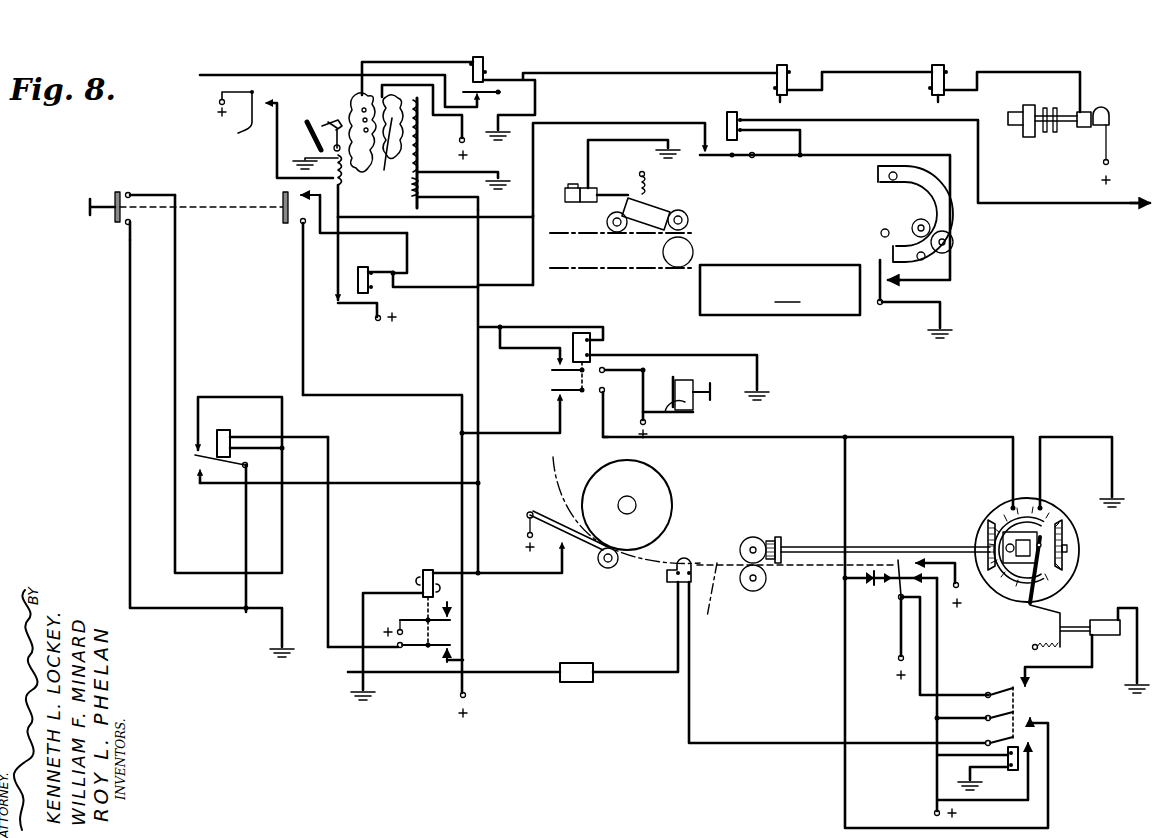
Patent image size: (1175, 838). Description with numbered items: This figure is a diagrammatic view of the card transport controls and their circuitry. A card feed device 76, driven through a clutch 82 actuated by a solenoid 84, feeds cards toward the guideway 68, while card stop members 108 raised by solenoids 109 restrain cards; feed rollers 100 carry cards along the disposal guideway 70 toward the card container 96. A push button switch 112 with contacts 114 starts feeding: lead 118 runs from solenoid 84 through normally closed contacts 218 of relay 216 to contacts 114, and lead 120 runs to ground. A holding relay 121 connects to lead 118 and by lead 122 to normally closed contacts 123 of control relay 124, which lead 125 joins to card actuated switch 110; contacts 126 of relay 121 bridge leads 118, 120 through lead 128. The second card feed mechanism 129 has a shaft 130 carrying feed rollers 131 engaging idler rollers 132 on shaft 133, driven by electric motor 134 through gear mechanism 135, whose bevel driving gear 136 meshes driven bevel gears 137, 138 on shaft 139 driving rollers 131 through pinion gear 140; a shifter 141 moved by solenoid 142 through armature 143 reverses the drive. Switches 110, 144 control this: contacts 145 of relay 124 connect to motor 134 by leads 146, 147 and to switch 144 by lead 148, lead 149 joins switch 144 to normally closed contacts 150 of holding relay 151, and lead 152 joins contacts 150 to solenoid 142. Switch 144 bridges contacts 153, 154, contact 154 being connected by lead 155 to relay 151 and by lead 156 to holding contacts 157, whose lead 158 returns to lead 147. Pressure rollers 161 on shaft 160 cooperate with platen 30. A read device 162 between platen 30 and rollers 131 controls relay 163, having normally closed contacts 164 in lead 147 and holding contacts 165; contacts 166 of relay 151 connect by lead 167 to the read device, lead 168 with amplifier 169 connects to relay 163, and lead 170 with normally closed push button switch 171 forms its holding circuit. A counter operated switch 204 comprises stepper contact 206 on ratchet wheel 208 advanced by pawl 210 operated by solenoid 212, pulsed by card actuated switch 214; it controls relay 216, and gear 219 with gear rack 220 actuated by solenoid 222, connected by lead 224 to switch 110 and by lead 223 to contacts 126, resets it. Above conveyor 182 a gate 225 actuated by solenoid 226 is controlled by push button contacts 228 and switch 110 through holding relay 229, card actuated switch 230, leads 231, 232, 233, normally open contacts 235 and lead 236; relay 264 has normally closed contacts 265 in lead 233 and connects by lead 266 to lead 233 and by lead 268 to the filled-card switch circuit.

The platen 30 is at (672, 505).
The guideway 68 is at (637, 546).
The card disposal guideway 70 is at (910, 196).
The card feed device 76 is at (1090, 110).
The clutch 82 is at (1047, 135).
The solenoid 84 is at (1112, 117).
The card container 96 is at (780, 290).
The card feed rollers 100 is at (953, 243).
The card stop members 108 is at (783, 99).
The solenoids 109 is at (788, 68).
The card actuated switch 110 is at (560, 515).
The push button switch 112 is at (118, 190).
The contacts 114 is at (131, 193).
The lead 118 is at (675, 73).
The lead 120 is at (130, 440).
The holding relay 121 is at (232, 430).
The lead 122 is at (327, 538).
The normally closed contacts 123 is at (455, 645).
The control relay 124 is at (430, 566).
The lead 125 is at (520, 575).
The contacts 126 is at (215, 468).
The lead 128 is at (244, 540).
The second card feed mechanism 129 is at (990, 503).
The driven transverse shaft 130 is at (740, 550).
The card feed rollers 131 is at (758, 538).
The idler rollers 132 is at (762, 588).
The shaft 133 is at (768, 580).
The electric motor 134 is at (1064, 533).
The gear mechanism 135 is at (1007, 585).
The bevel driving gear 136 is at (1033, 592).
The driven bevel gear 137 is at (988, 528).
The driven bevel gear 138 is at (1066, 557).
The shaft 139 is at (862, 546).
The pinion gear 140 is at (772, 538).
The shifter 141 is at (1032, 535).
The solenoid 142 is at (1105, 636).
The solenoid armature 143 is at (1063, 612).
The card actuated switch 144 is at (897, 588).
The normally open contacts 145 is at (455, 618).
The lead 146 is at (460, 500).
The lead 147 is at (808, 440).
The lead 148 is at (847, 486).
The lead 149 is at (918, 688).
The normally closed contacts 150 is at (1032, 692).
The holding relay 151 is at (1020, 770).
The lead 152 is at (1118, 660).
The contact 153 is at (920, 573).
The contact 154 is at (908, 560).
The lead 155 is at (938, 662).
The lead 156 is at (965, 708).
The holding contacts 157 is at (1020, 713).
The lead 158 is at (844, 712).
The transverse shaft 160 is at (616, 562).
The pressure rollers 161 is at (605, 568).
The read device 162 is at (672, 583).
The relay 163 is at (582, 332).
The normally closed contacts 164 is at (550, 390).
The holding contacts 165 is at (550, 370).
The normally open contacts 166 is at (1020, 738).
The lead 167 is at (778, 745).
The lead 168 is at (663, 675).
The amplifier 169 is at (578, 685).
The lead 170 is at (640, 356).
The push button switch 171 is at (700, 414).
The conveyor 182 is at (600, 272).
The counter operated switch 204 is at (348, 112).
The stepper contact 206 is at (336, 186).
The ratchet wheel 208 is at (390, 150).
The pawl 210 is at (327, 124).
The solenoid 212 is at (354, 214).
The card actuated switch 214 is at (240, 126).
The relay 216 is at (486, 70).
The normally closed contacts 218 is at (488, 96).
The gear 219 is at (420, 145).
The gear rack 220 is at (422, 118).
The solenoid 222 is at (425, 186).
The lead 223 is at (378, 482).
The lead 224 is at (480, 265).
The gate 225 is at (668, 210).
The solenoid 226 is at (590, 186).
The contacts 228 is at (283, 195).
The holding relay 229 is at (388, 297).
The card actuated switch 230 is at (878, 262).
The lead 231 is at (395, 394).
The lead 232 is at (410, 243).
The lead 233 is at (502, 288).
The normally open contacts 235 is at (350, 305).
The lead 236 is at (503, 216).
The relay 264 is at (727, 115).
The normally closed contacts 265 is at (715, 158).
The lead 266 is at (802, 145).
The lead 268 is at (1093, 205).